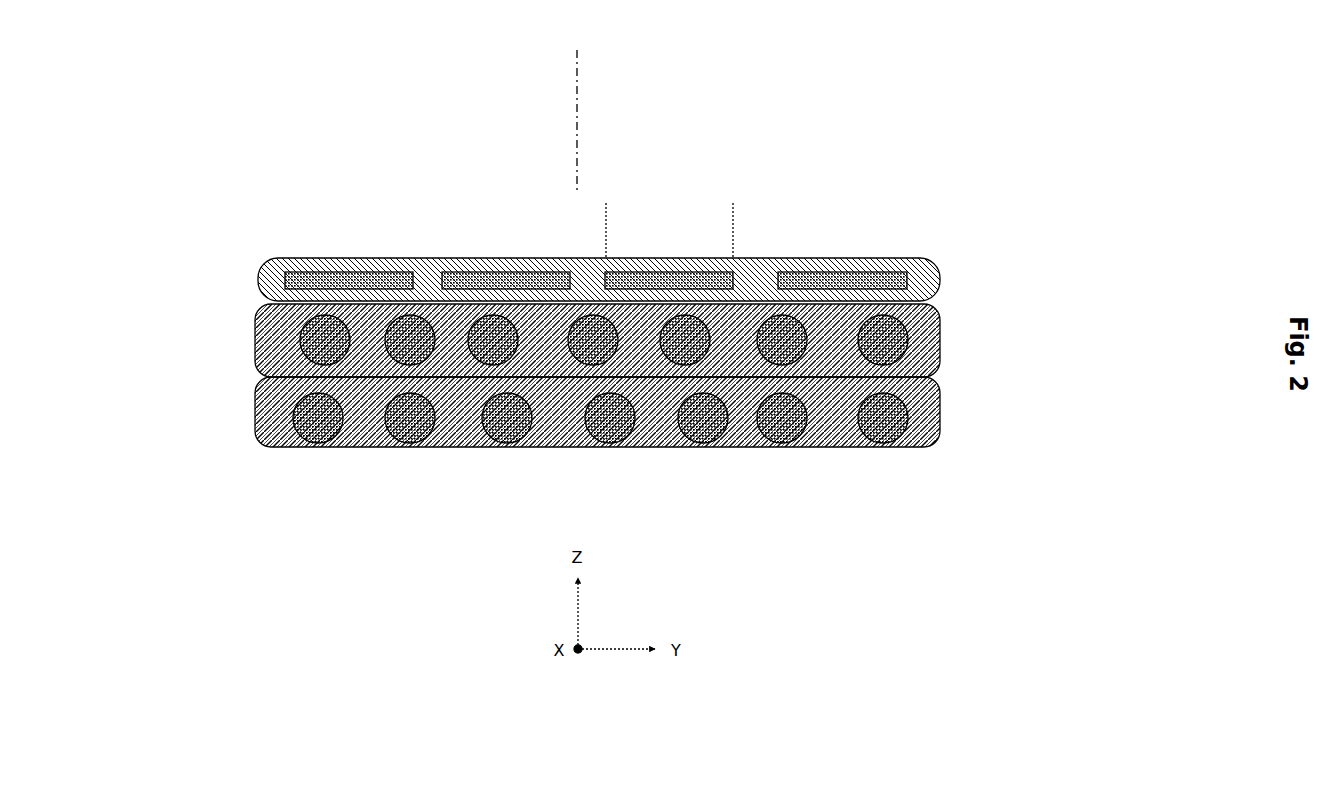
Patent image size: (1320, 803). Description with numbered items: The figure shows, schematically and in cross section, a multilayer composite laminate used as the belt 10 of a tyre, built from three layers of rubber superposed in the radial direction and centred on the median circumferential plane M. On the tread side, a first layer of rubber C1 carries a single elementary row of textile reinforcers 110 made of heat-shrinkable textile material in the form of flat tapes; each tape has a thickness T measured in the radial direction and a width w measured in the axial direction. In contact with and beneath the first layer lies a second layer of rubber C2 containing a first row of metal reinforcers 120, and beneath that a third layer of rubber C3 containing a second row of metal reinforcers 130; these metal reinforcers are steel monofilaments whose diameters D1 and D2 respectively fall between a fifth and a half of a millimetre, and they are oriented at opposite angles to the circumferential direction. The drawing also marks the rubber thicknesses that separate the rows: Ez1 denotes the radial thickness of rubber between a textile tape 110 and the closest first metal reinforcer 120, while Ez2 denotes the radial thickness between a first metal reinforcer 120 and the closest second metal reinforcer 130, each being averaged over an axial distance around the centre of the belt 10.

The belt 10 is at (915, 177).
The textile reinforcers 110 is at (830, 280).
The first metal reinforcers 120 is at (492, 343).
The second metal reinforcers 130 is at (778, 415).
The first layer of rubber C1 is at (427, 258).
The second layer of rubber C2 is at (538, 340).
The third layer of rubber C3 is at (370, 410).
The median circumferential plane M is at (582, 55).
The width w is at (730, 237).
The thickness T is at (749, 290).
The mean rubber thickness between textile tape and first metal reinforcer Ez1 is at (268, 317).
The mean rubber thickness between first and second metal reinforcers Ez2 is at (275, 368).
The diameter of first metal reinforcers D1 is at (962, 320).
The diameter of second metal reinforcers D2 is at (925, 440).